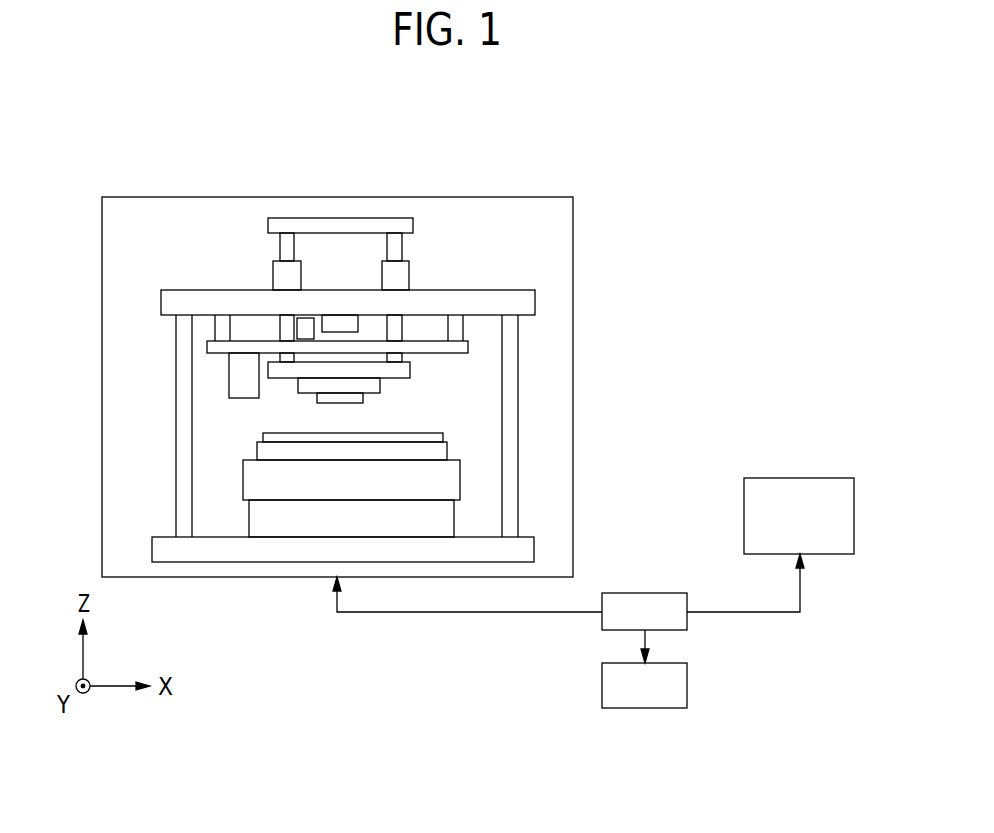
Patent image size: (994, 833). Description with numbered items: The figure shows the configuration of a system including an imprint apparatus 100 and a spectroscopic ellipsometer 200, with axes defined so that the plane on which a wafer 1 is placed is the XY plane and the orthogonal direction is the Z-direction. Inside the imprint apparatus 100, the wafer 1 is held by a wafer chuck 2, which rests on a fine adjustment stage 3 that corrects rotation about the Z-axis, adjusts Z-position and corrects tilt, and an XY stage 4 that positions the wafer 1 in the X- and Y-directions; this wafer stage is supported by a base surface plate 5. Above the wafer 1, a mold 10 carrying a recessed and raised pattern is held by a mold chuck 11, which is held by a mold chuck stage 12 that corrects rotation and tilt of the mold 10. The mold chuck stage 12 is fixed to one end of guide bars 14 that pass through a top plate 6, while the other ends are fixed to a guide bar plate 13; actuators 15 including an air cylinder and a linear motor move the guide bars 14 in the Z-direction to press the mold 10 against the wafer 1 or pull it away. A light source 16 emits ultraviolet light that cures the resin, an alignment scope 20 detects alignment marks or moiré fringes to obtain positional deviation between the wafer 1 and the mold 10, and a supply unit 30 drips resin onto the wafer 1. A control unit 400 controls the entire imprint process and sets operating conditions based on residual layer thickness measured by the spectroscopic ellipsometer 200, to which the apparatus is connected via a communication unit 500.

The imprint apparatus 100 is at (400, 170).
The wafer 1 is at (430, 433).
The wafer chuck 2 is at (437, 450).
The fine adjustment stage 3 is at (457, 480).
The XY stage 4 is at (453, 515).
The base surface plate 5 is at (527, 537).
The top plate 6 is at (190, 292).
The mold 10 is at (317, 400).
The mold chuck 11 is at (380, 383).
The mold chuck stage 12 is at (407, 368).
The guide bar plate 13 is at (408, 227).
The guide bars 14 is at (280, 250).
The actuators 15 is at (400, 273).
The light source 16 is at (348, 317).
The alignment scope 20 is at (305, 320).
The supply unit 30 is at (245, 398).
The spectroscopic ellipsometer 200 is at (802, 478).
The control unit 400 is at (687, 684).
The communication unit 500 is at (649, 593).